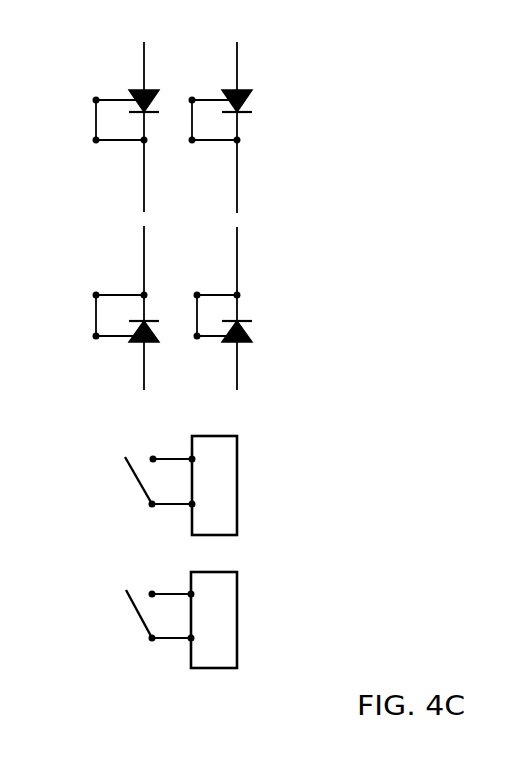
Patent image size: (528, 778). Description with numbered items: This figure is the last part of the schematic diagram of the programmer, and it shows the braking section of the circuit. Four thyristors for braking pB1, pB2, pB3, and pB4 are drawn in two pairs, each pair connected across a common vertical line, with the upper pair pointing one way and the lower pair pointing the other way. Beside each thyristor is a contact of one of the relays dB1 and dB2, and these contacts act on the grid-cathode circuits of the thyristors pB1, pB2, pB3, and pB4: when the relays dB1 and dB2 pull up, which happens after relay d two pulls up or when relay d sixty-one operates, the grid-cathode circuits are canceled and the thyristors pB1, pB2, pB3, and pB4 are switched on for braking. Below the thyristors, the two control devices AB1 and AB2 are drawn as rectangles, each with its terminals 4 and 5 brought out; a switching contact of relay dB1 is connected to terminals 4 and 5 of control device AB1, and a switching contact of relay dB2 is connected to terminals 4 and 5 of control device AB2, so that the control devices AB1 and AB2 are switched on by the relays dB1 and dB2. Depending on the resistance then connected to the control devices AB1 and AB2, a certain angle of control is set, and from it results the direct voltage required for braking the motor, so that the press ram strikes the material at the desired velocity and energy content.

The thyristor for braking pB1 is at (125, 88).
The thyristor for braking pB2 is at (124, 302).
The thyristor for braking pB3 is at (217, 88).
The thyristor for braking pB4 is at (214, 302).
The relay dB1 is at (100, 300).
The relay dB2 is at (162, 367).
The control device AB1 is at (214, 485).
The control device AB2 is at (214, 620).
The relay terminal 4 is at (178, 528).
The relay terminal 5 is at (178, 571).